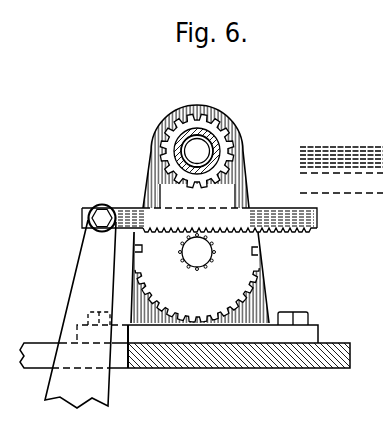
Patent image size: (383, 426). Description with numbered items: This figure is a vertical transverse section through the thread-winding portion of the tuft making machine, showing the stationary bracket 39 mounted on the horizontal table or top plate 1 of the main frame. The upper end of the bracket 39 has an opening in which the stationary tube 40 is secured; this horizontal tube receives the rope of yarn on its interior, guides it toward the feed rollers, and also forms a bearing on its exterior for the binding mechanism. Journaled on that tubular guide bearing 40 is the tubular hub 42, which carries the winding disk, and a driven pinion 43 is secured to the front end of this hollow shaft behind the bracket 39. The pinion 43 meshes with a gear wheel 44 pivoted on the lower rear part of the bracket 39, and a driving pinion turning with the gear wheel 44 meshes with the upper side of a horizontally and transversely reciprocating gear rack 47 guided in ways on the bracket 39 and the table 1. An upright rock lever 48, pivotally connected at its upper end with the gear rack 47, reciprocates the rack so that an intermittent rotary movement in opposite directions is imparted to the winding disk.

The table 1 is at (352, 357).
The stationary bracket 39 is at (160, 127).
The stationary tube 40 is at (198, 146).
The tubular hub 42 is at (174, 152).
The driven pinion 43 is at (238, 134).
The gear wheel 44 is at (197, 278).
The gear rack 47 is at (305, 228).
The rock lever 48 is at (80, 307).